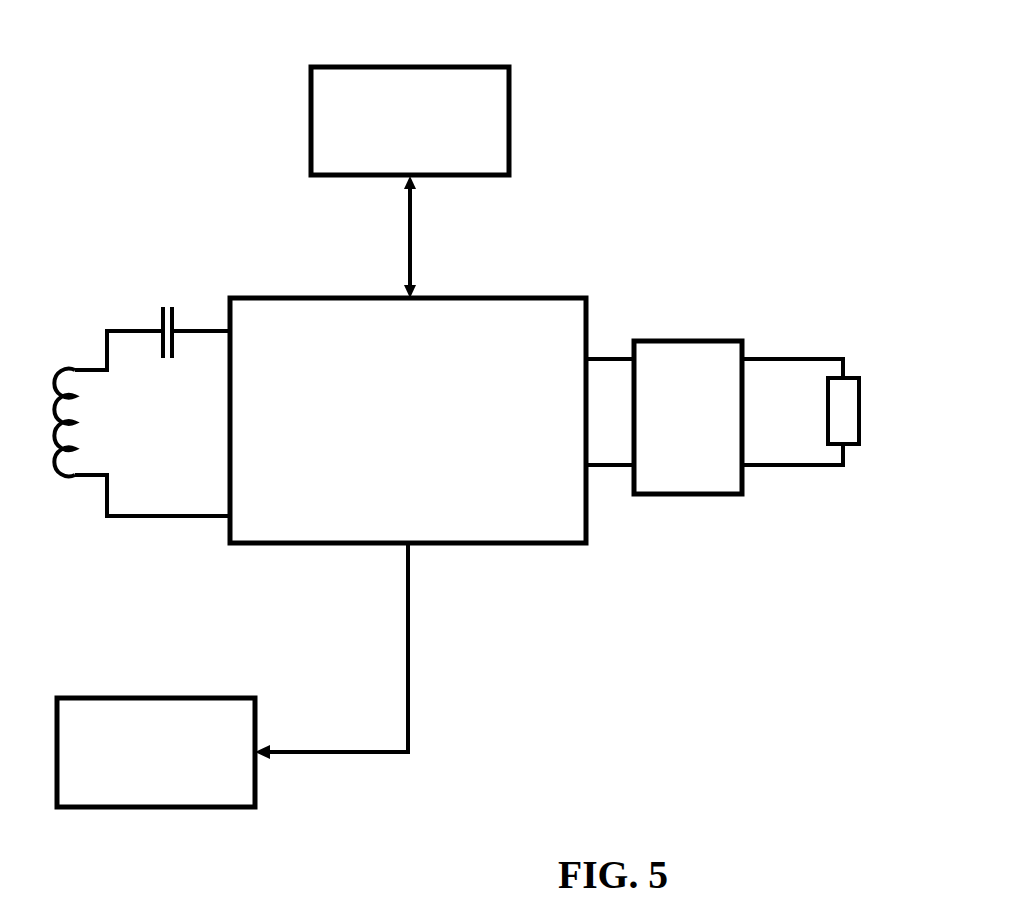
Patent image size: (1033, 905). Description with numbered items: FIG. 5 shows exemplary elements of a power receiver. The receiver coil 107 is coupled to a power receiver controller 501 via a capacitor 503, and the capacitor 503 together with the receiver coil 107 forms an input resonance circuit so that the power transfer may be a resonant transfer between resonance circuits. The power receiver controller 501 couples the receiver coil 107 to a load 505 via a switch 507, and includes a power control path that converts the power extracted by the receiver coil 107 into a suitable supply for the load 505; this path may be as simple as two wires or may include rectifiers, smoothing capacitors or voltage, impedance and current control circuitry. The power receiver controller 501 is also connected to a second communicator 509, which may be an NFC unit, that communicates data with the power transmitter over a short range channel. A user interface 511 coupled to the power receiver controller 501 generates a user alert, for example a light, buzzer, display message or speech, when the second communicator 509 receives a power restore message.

The receiver coil 107 is at (61, 358).
The power receiver controller 501 is at (570, 298).
The capacitor 503 is at (172, 307).
The load 505 is at (859, 410).
The switch 507 is at (692, 338).
The second communicator 509 is at (210, 698).
The user interface 511 is at (464, 67).